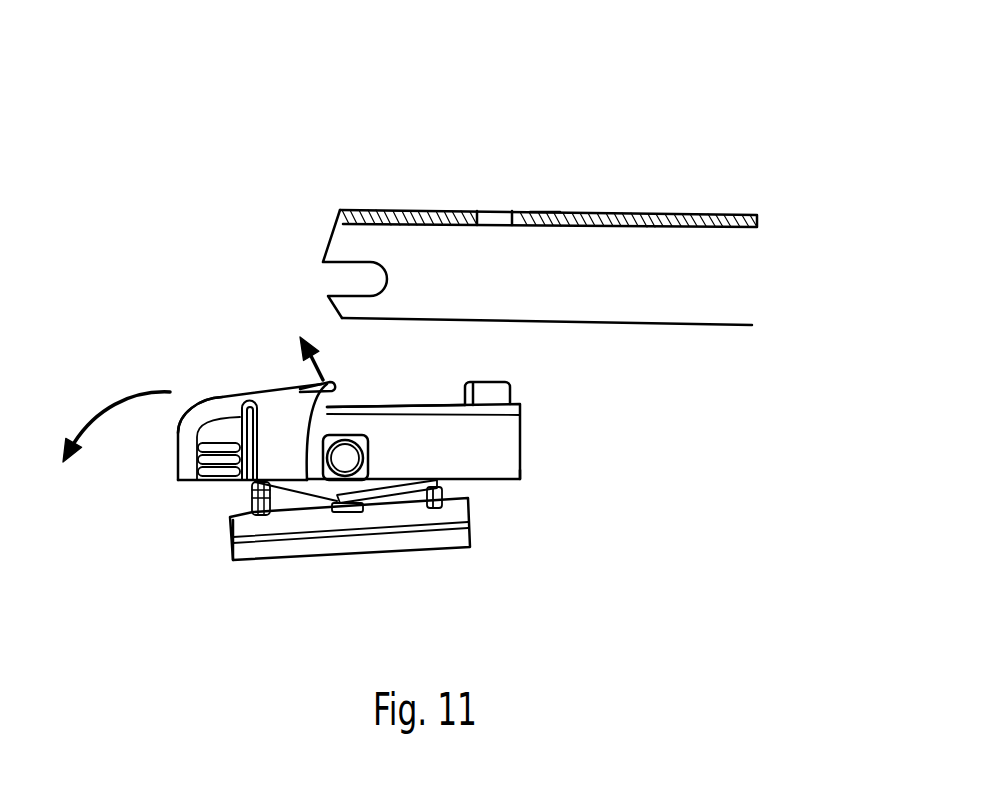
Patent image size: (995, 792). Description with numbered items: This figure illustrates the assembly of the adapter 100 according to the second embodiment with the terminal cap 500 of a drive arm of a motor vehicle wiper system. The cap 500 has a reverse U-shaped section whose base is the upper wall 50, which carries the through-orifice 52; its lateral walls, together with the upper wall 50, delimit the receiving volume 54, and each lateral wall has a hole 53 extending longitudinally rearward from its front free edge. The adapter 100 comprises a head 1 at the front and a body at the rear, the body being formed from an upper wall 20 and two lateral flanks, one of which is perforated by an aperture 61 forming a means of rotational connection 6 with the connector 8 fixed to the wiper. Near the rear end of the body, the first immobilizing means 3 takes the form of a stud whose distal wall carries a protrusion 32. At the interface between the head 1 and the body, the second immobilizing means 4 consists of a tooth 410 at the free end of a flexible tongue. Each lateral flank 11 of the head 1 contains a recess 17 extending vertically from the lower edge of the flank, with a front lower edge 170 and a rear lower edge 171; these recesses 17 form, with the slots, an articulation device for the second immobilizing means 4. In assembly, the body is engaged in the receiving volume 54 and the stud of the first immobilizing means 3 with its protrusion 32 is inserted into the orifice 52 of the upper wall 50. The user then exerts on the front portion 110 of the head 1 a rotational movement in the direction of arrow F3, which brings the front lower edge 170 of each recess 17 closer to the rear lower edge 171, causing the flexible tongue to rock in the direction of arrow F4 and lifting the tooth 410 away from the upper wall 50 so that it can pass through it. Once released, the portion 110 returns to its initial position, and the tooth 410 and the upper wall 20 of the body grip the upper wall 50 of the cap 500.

The head 1 is at (188, 391).
The first immobilizing means 3 is at (518, 408).
The second immobilizing means 4 is at (288, 372).
The means of rotational connection 6 is at (390, 462).
The connector 8 is at (407, 542).
The lateral flank 11 is at (288, 455).
The recess 17 is at (232, 518).
The upper wall 20 is at (420, 405).
The protrusion 32 is at (465, 385).
The upper wall 50 is at (639, 212).
The through-orifice 52 is at (486, 211).
The hole 53 is at (347, 280).
The receiving volume 54 is at (584, 283).
The aperture 61 is at (363, 503).
The adapter 100 is at (538, 494).
The portion of the head 110 is at (188, 455).
The front lower edge 170 is at (230, 481).
The rear lower edge 171 is at (250, 517).
The tooth 410 is at (333, 388).
The terminal cap 500 is at (552, 195).
The arrow F3 is at (116, 427).
The arrow F4 is at (325, 357).